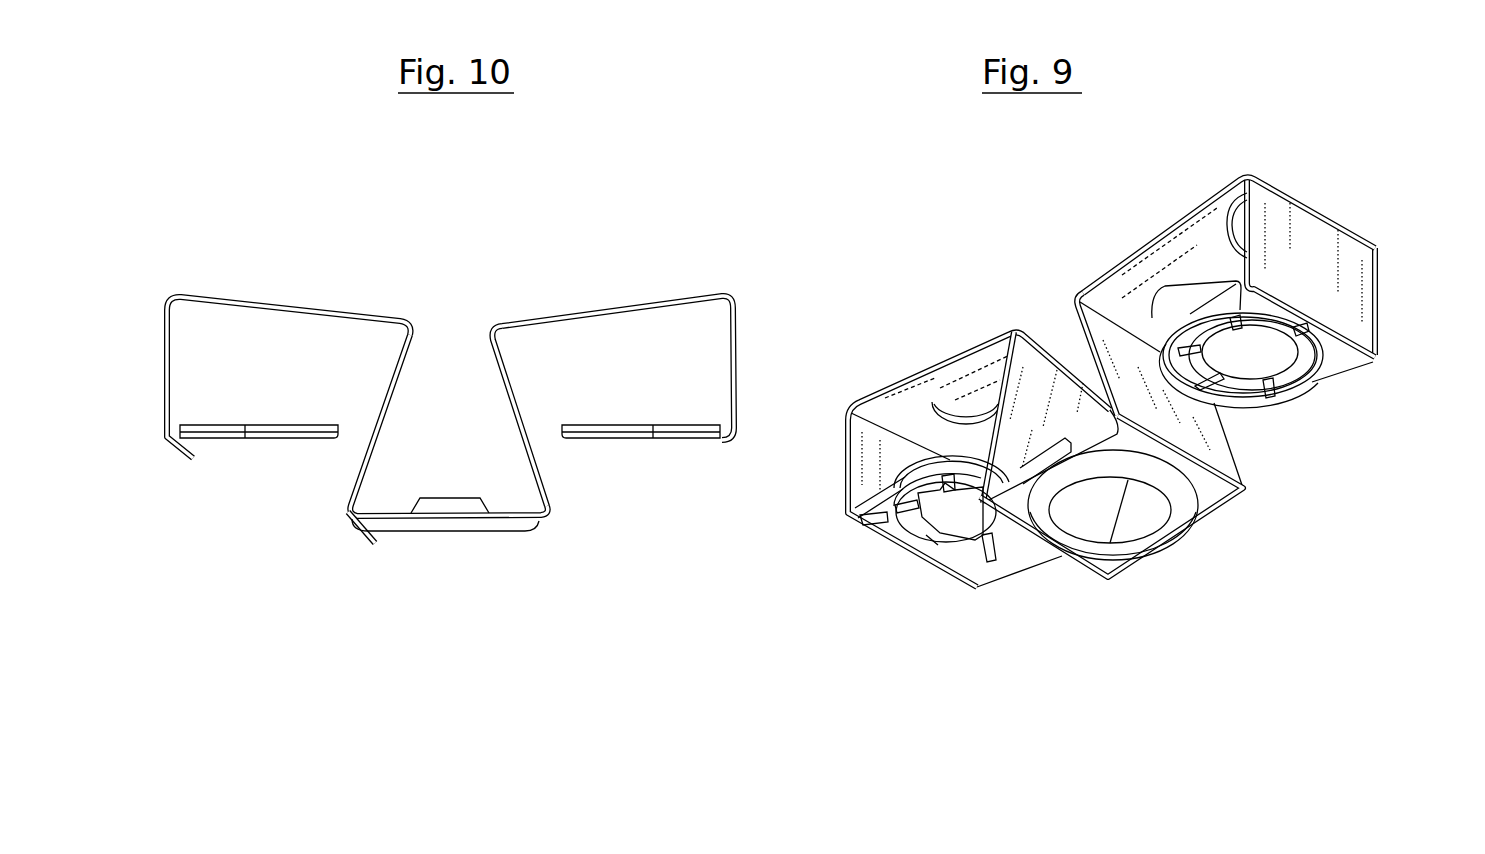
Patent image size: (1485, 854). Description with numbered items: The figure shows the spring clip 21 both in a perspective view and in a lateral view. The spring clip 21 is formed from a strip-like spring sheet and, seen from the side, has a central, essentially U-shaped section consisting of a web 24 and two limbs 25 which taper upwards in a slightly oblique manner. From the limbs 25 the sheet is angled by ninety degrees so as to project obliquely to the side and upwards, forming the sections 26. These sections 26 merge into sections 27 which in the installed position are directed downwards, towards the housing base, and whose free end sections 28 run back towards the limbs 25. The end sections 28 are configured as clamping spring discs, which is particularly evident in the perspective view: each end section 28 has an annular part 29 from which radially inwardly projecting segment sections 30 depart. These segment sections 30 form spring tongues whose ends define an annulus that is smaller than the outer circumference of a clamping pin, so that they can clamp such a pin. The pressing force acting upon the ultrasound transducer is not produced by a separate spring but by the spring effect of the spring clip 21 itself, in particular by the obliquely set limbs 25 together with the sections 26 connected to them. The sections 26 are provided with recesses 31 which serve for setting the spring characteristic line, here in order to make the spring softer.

In FIG. 10, the spring clip 21 is at (465, 393).
In FIG. 9, the spring clip 21 is at (1123, 396).
In FIG. 10, the web 24 is at (500, 518).
In FIG. 9, the web 24 is at (1200, 513).
In FIG. 10, the limb 25 is at (382, 442).
In FIG. 9, the limb 25 is at (1028, 423).
In FIG. 10, the section 26 is at (298, 316).
In FIG. 9, the section 26 is at (967, 357).
In FIG. 10, the section 27 is at (164, 383).
In FIG. 9, the section 27 is at (857, 482).
In FIG. 10, the end section 28 is at (280, 437).
In FIG. 9, the end section 28 is at (993, 573).
In FIG. 9, the annular part 29 is at (883, 537).
In FIG. 9, the segment section 30 is at (910, 533).
In FIG. 9, the recess 31 is at (950, 410).